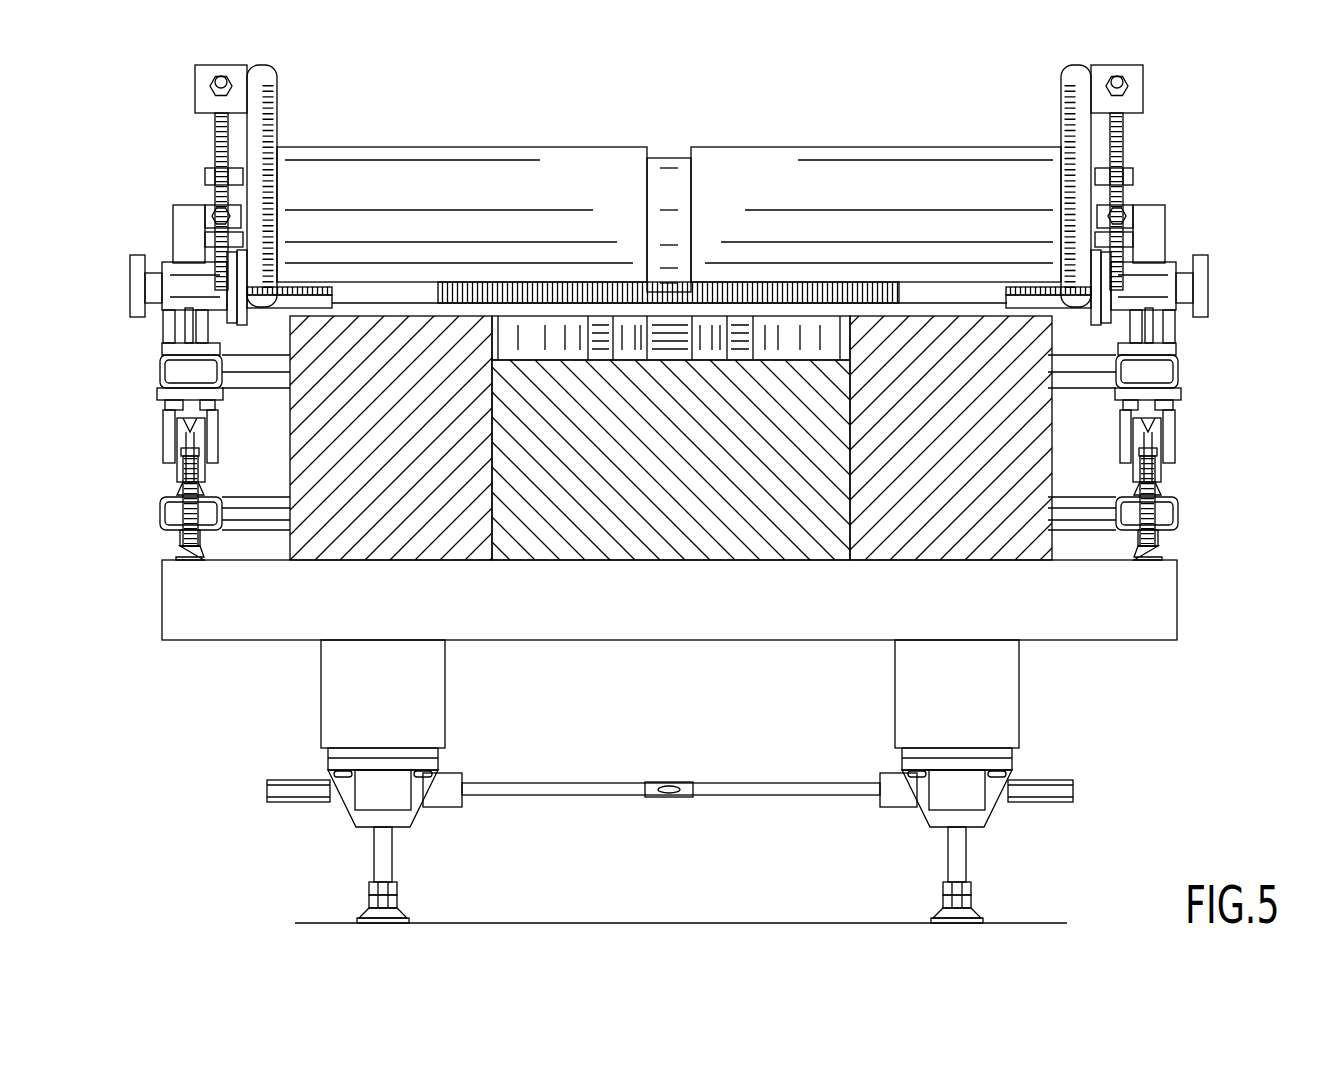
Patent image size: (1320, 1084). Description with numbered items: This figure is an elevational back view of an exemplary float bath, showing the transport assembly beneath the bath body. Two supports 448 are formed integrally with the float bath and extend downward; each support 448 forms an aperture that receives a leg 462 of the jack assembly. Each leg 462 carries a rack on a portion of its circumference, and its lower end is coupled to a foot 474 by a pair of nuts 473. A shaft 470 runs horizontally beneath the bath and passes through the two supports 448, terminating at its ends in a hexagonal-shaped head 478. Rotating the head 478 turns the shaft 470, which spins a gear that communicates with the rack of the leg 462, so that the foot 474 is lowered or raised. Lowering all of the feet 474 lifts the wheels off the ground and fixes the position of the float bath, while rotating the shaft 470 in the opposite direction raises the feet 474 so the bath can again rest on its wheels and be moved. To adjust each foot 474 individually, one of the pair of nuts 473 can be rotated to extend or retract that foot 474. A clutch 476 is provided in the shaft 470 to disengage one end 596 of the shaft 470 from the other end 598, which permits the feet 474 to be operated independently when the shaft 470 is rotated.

The support 448 is at (293, 696).
The leg 462 is at (377, 857).
The shaft 470 is at (800, 786).
The nuts 473 is at (410, 893).
The foot 474 is at (370, 914).
The clutch 476 is at (668, 782).
The head 478 is at (1068, 782).
The end of the shaft 596 is at (1080, 814).
The end of the shaft 598 is at (260, 814).